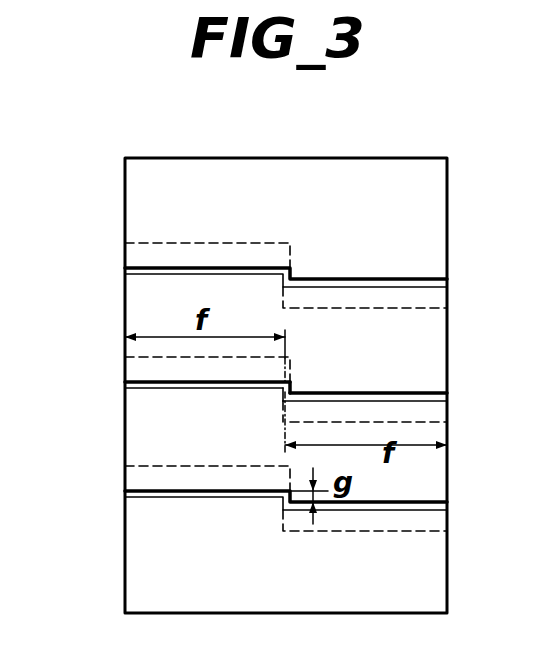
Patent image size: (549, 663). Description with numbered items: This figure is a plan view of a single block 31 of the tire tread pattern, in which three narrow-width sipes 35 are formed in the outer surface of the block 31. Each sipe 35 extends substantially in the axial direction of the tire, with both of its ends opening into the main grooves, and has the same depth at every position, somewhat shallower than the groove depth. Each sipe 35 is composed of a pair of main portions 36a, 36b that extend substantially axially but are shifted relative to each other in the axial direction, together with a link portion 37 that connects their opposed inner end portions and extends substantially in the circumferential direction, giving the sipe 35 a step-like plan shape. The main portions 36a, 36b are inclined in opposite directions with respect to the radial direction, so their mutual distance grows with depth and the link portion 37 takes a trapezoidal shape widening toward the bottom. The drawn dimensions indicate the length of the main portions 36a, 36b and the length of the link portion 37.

The block 31 is at (390, 158).
The sipe 35 is at (204, 264).
The main portion 36a is at (168, 391).
The main portion 36b is at (408, 391).
The link portion 37 is at (290, 384).